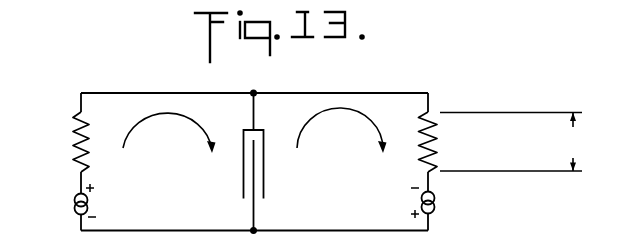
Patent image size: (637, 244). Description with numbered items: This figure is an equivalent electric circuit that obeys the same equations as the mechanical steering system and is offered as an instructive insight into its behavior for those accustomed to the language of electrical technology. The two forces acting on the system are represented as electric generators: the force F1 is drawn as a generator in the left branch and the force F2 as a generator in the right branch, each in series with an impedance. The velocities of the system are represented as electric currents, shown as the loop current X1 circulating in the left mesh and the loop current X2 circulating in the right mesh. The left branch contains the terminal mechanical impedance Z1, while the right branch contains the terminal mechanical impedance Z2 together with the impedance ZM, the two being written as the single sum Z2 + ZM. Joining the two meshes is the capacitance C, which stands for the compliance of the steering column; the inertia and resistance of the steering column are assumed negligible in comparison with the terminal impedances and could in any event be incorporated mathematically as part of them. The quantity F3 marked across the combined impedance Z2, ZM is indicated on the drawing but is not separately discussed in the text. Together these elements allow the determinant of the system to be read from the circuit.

The terminal mechanical impedance Z1 is at (66, 142).
The force F1 is at (69, 200).
The velocity X1 is at (169, 133).
The capacitance C is at (262, 162).
The velocity X2 is at (342, 130).
The terminal mechanical impedance Z2 is at (461, 142).
The mechanical impedance component ZM is at (461, 142).
The force F2 is at (433, 203).
The voltage across secondary impedance F3 is at (511, 142).